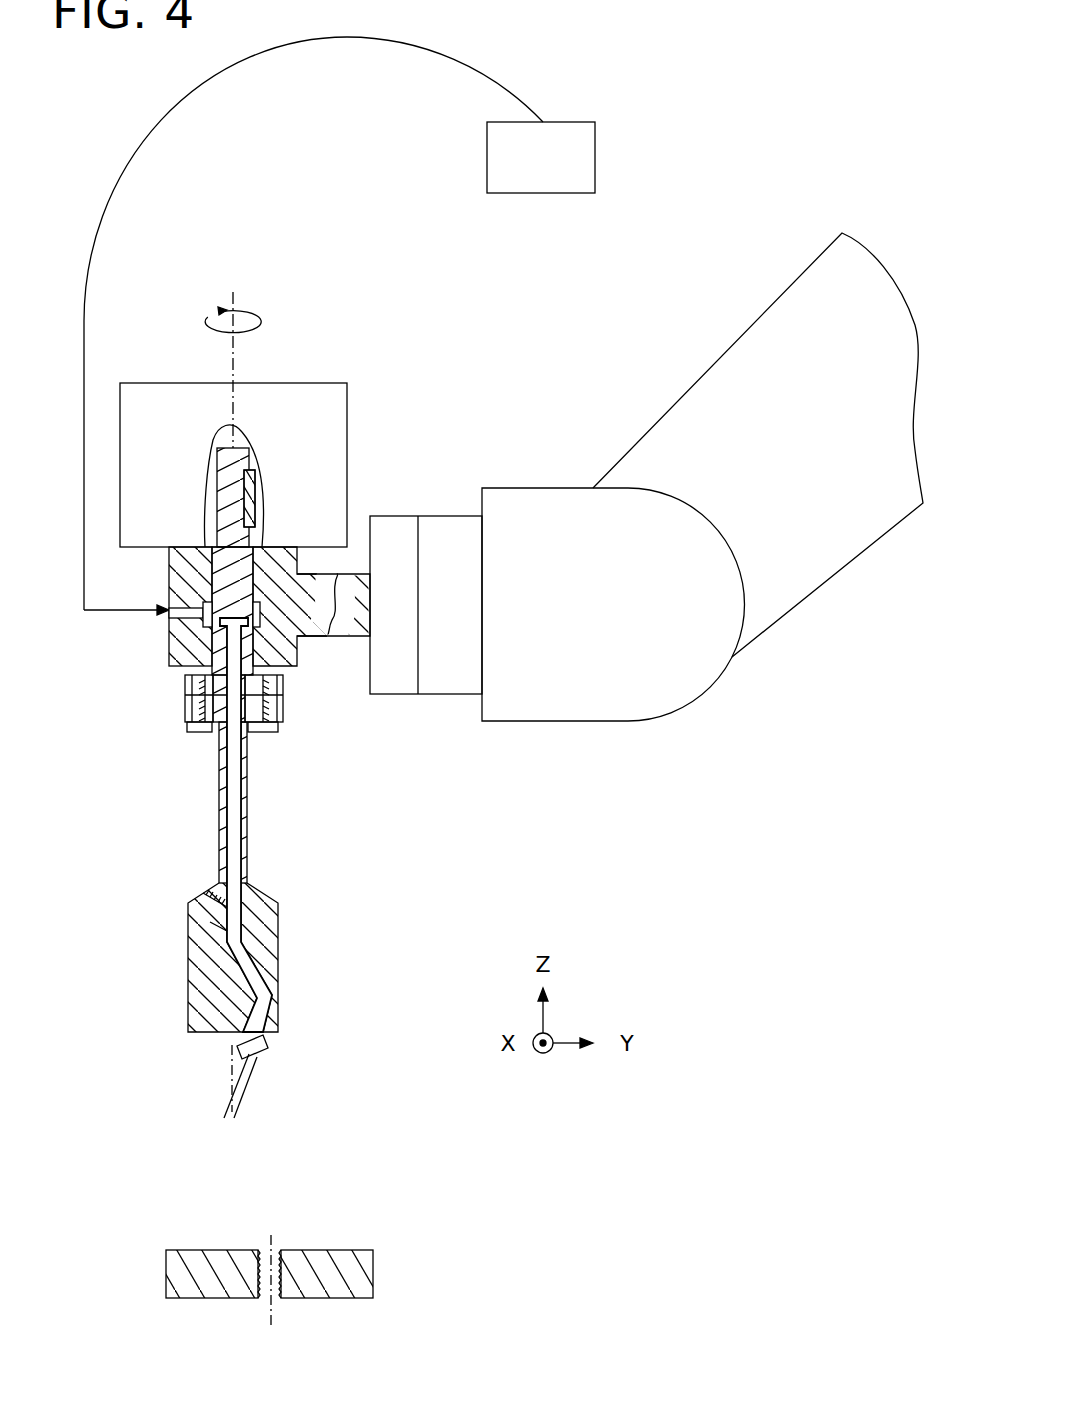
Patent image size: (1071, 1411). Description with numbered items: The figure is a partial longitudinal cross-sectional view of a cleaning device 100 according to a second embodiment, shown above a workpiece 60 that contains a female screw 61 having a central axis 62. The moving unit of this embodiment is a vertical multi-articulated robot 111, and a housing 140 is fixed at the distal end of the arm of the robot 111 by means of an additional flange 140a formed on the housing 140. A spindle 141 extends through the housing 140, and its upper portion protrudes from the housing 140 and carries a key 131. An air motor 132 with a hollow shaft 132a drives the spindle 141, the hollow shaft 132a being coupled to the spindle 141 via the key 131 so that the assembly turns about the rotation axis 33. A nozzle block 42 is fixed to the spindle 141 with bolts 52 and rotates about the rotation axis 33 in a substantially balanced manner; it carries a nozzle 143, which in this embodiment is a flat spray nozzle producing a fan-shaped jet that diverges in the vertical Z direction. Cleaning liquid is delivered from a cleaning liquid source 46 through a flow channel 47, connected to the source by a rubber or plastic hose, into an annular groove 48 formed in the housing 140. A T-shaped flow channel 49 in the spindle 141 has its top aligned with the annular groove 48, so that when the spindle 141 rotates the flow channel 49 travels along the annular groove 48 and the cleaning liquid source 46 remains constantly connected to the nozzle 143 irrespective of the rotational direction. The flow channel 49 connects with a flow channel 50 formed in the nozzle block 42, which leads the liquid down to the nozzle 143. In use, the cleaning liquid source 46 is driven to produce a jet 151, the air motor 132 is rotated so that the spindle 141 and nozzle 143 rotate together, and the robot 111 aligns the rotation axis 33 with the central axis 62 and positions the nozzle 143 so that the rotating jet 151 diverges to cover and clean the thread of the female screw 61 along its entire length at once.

The cleaning device 100 is at (853, 82).
The cleaning liquid source 46 is at (578, 122).
The rotation axis 33 is at (233, 367).
The air motor 132 is at (348, 403).
The hollow shaft 132a is at (246, 452).
The key 131 is at (254, 497).
The vertical multi-articulated robot 111 is at (637, 433).
The annular groove 48 is at (207, 600).
The flow channel 47 is at (186, 624).
The flow channel 49 is at (244, 633).
The spindle 141 is at (193, 685).
The housing 140 is at (300, 656).
The flange 140a is at (393, 694).
The bolts 52 is at (198, 733).
The flow channel 50 is at (242, 833).
The nozzle block 42 is at (278, 942).
The nozzle 143 is at (268, 1044).
The jet 151 is at (230, 1097).
The workpiece 60 is at (382, 1269).
The female screw 61 is at (275, 1291).
The central axis 62 is at (268, 1244).